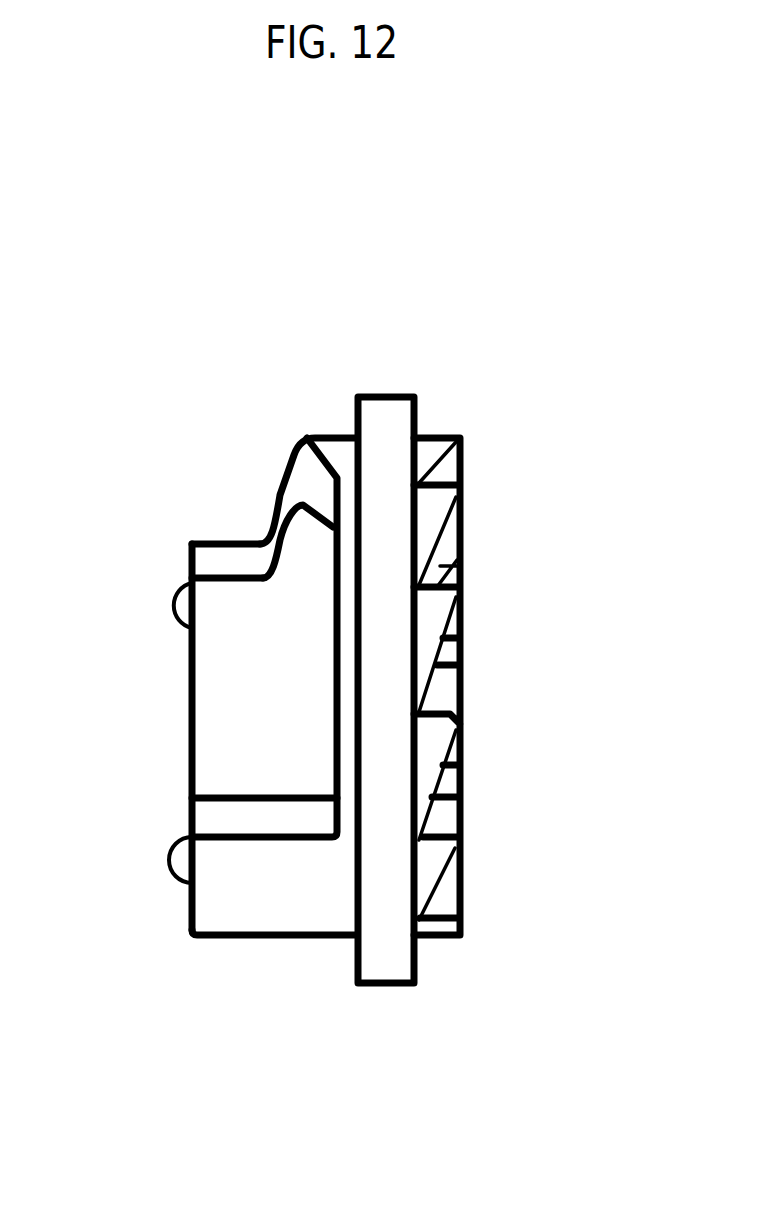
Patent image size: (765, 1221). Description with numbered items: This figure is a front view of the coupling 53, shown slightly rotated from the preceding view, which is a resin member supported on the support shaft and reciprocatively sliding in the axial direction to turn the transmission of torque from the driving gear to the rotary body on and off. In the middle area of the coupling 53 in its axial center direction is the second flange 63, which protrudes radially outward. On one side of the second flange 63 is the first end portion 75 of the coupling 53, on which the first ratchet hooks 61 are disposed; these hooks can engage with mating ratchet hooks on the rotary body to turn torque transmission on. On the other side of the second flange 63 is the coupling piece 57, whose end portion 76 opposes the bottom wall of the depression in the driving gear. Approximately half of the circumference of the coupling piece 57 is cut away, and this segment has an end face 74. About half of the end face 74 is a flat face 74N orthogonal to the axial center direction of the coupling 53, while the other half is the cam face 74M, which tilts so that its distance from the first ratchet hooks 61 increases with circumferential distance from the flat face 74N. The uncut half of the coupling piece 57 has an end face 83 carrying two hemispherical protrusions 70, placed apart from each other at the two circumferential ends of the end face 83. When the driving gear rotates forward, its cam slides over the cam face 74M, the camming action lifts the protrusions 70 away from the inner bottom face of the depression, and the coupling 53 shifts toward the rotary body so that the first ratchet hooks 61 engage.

The coupling 53 is at (285, 277).
The coupling piece 57 is at (280, 913).
The first ratchet hooks 61 is at (425, 447).
The second flange 63 is at (382, 423).
The protrusions 70 is at (168, 600).
The end face 74 is at (298, 567).
The cam face 74M is at (283, 495).
The flat face 74N is at (335, 677).
The first end portion 75 is at (423, 875).
The end portion 76 is at (223, 910).
The end face 83 is at (188, 710).